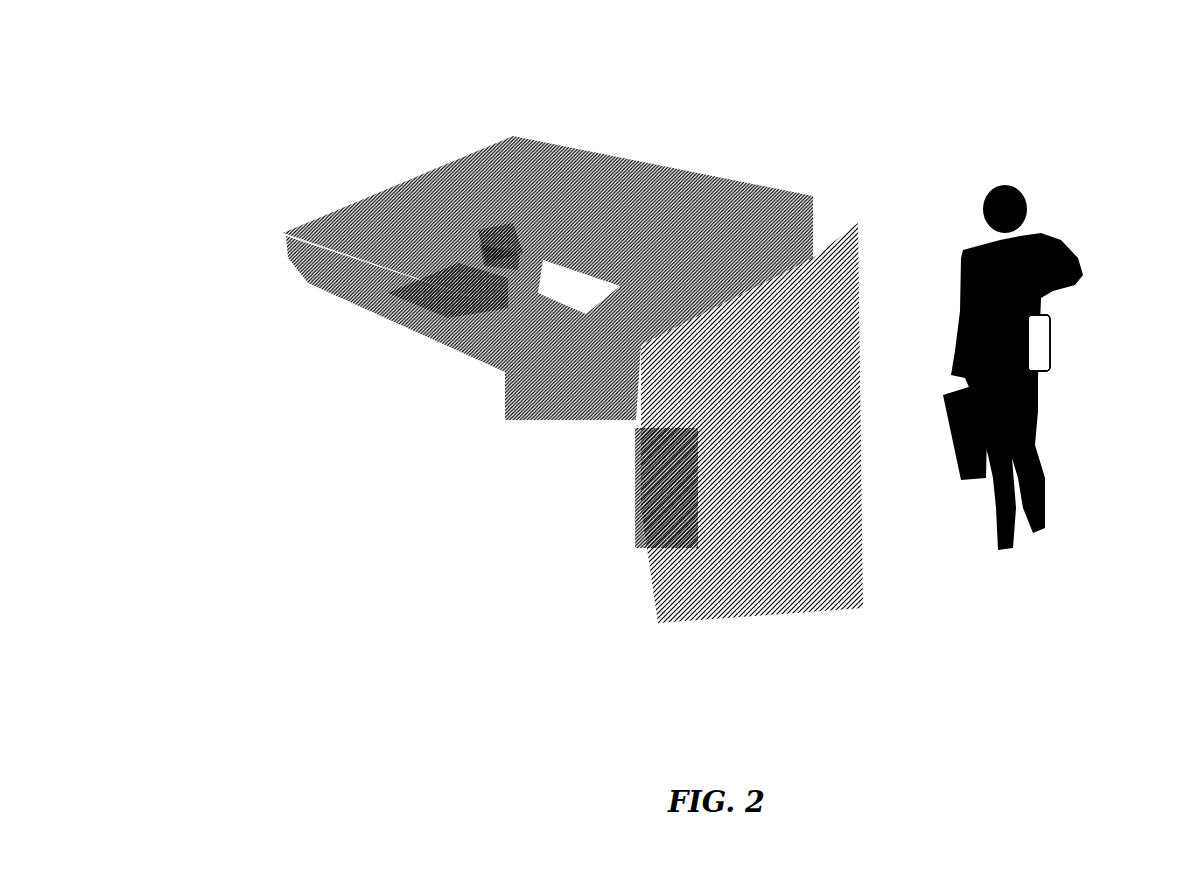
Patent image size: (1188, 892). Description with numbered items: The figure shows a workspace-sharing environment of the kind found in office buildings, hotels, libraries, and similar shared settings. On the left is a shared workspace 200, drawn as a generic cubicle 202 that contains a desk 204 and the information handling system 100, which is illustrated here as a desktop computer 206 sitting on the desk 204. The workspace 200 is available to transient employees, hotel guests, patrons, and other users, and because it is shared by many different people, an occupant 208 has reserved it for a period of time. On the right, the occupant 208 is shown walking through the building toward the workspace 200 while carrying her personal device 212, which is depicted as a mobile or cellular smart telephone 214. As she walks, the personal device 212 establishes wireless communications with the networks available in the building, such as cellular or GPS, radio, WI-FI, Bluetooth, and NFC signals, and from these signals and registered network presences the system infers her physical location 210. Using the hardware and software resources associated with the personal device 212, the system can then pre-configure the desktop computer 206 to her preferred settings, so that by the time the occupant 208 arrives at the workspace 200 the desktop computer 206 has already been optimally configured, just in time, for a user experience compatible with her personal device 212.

The information handling system 100 is at (472, 235).
The shared workspace 200 is at (676, 379).
The cubicle 202 is at (713, 166).
The desk 204 is at (443, 261).
The desktop computer 206 is at (448, 202).
The occupant 208 is at (1043, 225).
The physical location 210 is at (1042, 333).
The personal device 212 is at (1088, 350).
The smart telephone 214 is at (1088, 364).